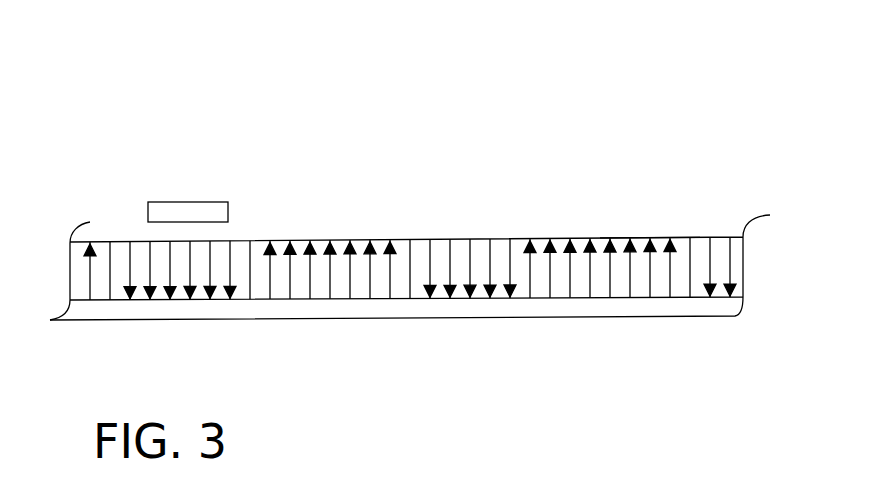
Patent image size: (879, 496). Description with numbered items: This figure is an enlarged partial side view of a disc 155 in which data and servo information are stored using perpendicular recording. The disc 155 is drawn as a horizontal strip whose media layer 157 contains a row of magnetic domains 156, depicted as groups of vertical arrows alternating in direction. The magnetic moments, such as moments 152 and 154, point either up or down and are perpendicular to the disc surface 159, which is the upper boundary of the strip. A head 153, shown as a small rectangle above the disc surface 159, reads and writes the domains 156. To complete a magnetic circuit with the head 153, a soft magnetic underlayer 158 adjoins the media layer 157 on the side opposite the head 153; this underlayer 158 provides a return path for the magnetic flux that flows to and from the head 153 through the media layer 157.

The magnetic moment 152 is at (467, 260).
The head 153 is at (190, 202).
The magnetic moment 154 is at (310, 257).
The disc 155 is at (505, 120).
The magnetic domains 156 is at (210, 300).
The media layer 157 is at (618, 277).
The soft magnetic underlayer 158 is at (567, 307).
The disc surface 159 is at (631, 234).